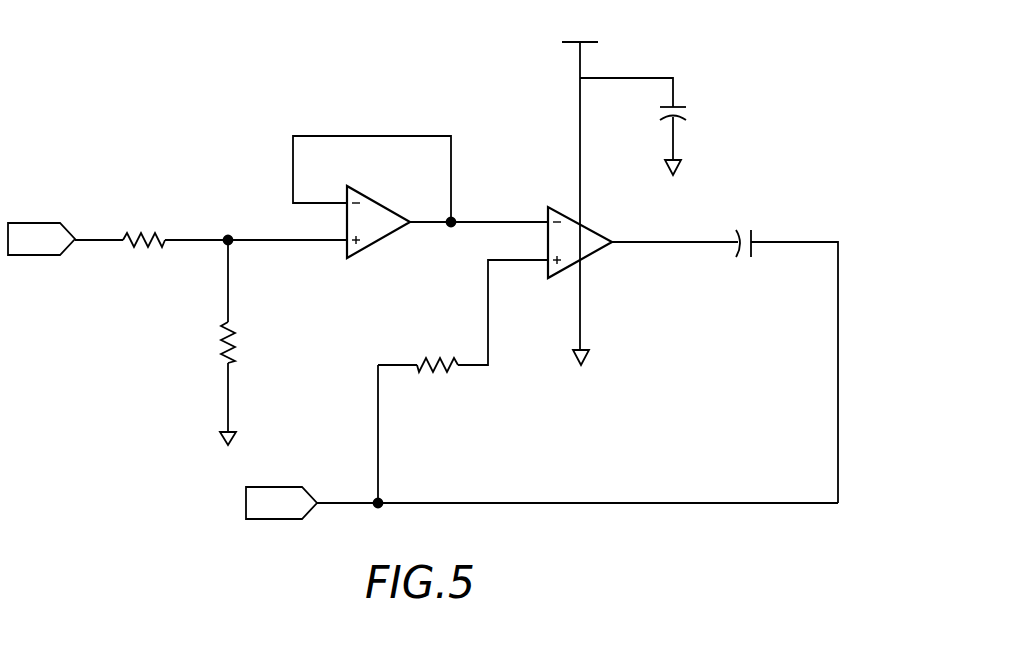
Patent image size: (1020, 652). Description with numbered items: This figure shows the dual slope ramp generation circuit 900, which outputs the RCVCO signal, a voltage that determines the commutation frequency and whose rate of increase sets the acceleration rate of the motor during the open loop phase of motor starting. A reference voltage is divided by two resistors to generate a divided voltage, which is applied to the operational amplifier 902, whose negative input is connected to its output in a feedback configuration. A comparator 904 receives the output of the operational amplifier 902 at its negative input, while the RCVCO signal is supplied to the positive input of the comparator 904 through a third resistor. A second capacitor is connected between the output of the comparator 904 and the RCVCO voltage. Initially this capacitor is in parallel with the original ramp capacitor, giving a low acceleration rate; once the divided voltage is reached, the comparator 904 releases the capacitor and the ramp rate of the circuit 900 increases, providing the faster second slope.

The dual slope ramp generation circuit 900 is at (197, 131).
The operational amplifier 902 is at (372, 198).
The comparator 904 is at (588, 226).